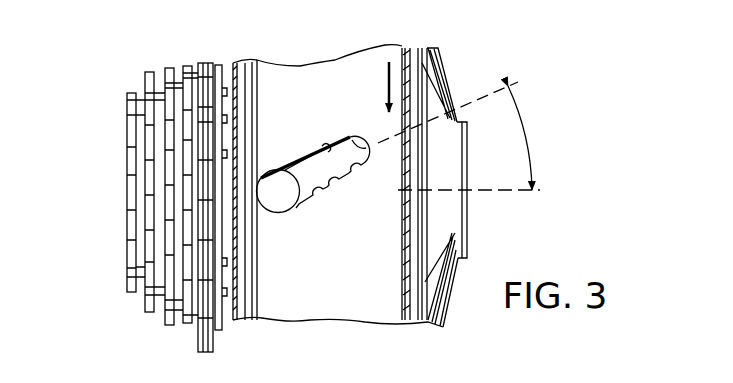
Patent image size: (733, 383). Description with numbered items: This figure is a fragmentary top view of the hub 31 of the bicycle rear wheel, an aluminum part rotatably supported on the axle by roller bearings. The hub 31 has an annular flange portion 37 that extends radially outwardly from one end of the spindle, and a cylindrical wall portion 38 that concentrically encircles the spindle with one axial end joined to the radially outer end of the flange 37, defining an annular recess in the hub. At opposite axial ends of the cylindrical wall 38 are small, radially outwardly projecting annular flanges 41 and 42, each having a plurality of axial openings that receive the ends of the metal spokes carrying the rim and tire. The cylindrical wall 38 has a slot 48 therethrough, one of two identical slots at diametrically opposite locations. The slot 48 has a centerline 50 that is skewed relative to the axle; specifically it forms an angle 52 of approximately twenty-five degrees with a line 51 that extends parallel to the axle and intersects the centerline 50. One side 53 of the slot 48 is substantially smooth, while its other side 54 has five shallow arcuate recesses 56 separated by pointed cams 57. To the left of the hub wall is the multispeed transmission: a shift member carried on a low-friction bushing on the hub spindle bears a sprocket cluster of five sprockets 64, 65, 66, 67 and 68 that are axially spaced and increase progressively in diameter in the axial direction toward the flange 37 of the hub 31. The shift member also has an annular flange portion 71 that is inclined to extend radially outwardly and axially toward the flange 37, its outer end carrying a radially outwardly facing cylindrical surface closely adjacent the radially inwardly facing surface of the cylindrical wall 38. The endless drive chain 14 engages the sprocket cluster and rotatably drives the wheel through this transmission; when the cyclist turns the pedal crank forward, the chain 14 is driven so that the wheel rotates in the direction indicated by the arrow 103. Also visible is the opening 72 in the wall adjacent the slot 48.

The endless drive chain 14 is at (193, 346).
The hub 31 is at (447, 62).
The annular flange portion 37 is at (440, 238).
The cylindrical wall portion 38 is at (377, 295).
The annular flange 41 is at (239, 315).
The annular flange 42 is at (413, 302).
The slot 48 is at (353, 135).
The centerline 50 is at (510, 80).
The line 51 is at (535, 190).
The angle 52 is at (526, 135).
The side 53 is at (322, 142).
The other side 54 is at (309, 196).
The arcuate recesses 56 is at (330, 187).
The pointed cams 57 is at (362, 175).
The sprocket 64 is at (130, 93).
The sprocket 65 is at (148, 72).
The sprocket 66 is at (170, 68).
The sprocket 67 is at (188, 66).
The sprocket 68 is at (205, 63).
The annular flange portion 71 is at (302, 157).
The circular opening 72 is at (288, 160).
The arrow 103 is at (386, 78).